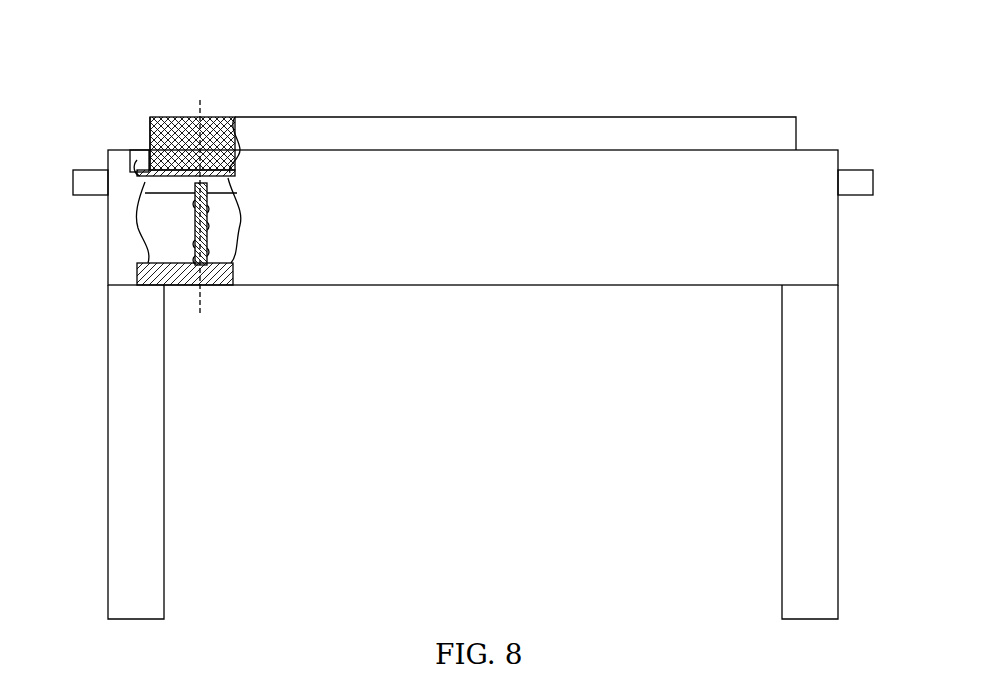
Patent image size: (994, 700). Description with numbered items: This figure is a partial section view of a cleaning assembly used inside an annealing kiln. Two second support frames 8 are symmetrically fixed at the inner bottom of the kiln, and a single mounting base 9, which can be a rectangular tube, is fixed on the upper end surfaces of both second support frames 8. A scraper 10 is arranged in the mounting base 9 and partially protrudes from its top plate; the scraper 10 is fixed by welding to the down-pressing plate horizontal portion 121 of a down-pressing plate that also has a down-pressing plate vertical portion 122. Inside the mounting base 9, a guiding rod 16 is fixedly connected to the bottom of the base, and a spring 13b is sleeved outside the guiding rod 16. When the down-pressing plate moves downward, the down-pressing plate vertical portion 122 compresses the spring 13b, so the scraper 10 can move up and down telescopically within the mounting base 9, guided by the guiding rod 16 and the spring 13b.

The second support frame 8 is at (142, 348).
The mounting base 9 is at (803, 249).
The scraper 10 is at (748, 139).
The guiding rod 16 is at (157, 118).
The spring 13b is at (185, 238).
The down-pressing plate horizontal portion 121 is at (142, 154).
The down-pressing plate vertical portion 122 is at (142, 172).